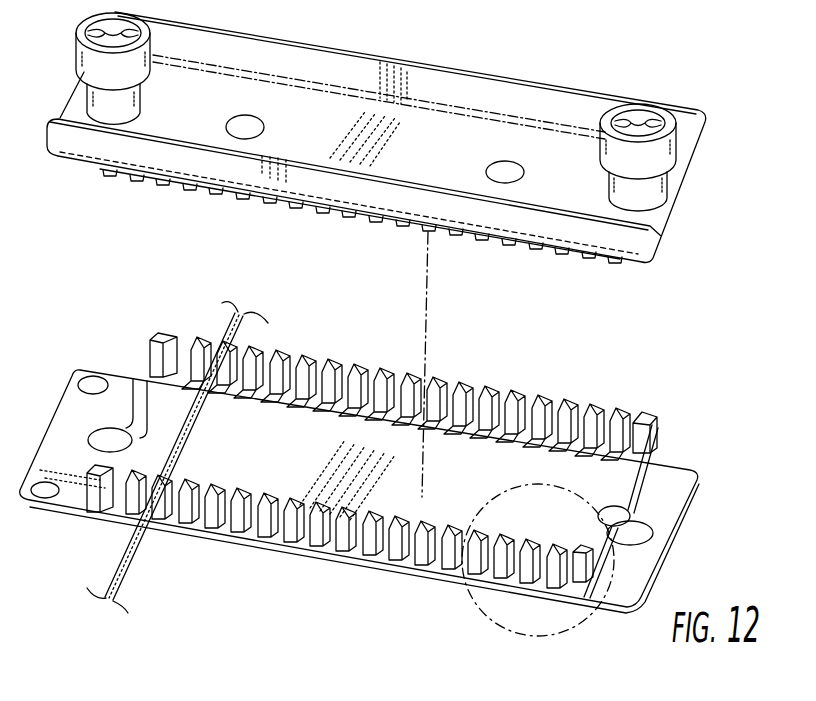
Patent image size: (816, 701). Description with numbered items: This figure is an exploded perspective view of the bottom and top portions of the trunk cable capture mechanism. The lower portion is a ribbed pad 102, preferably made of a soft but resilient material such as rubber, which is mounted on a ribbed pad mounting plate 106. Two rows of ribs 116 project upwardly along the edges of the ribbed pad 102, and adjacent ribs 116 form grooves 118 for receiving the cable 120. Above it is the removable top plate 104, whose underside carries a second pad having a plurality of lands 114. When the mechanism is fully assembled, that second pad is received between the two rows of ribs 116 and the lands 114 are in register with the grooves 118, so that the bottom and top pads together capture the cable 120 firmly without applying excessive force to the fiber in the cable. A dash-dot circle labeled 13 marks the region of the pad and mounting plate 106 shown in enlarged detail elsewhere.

The removable top plate 104 is at (443, 97).
The lands 114 is at (505, 257).
The ribbed pad 102 is at (167, 410).
The ribs 116 is at (500, 397).
The grooves 118 is at (393, 380).
The ribbed pad mounting plate 106 is at (667, 493).
The cable 120 is at (127, 570).
The detail circle for FIG. 13 is at (550, 637).